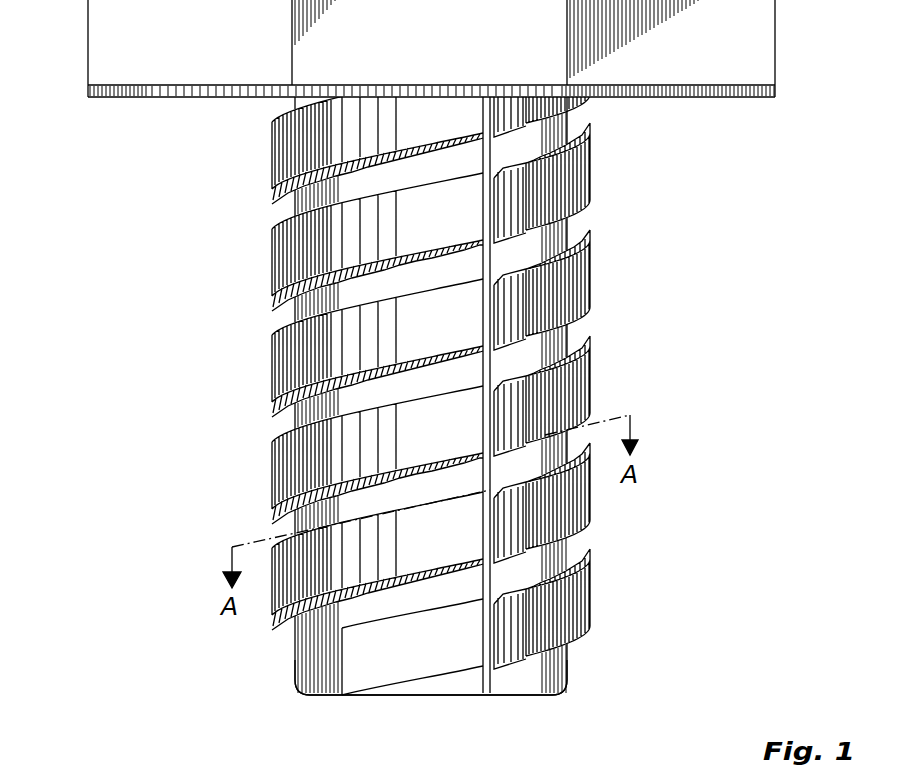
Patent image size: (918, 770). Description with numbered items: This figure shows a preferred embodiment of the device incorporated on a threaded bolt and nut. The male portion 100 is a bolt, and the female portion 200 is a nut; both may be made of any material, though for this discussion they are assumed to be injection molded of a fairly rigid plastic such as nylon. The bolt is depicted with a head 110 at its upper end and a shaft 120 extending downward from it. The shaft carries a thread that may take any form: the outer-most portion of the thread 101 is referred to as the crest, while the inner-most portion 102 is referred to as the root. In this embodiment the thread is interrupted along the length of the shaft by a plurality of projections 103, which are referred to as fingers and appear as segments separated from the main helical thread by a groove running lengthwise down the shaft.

The male portion 100 is at (150, 278).
The crest of the thread 101 is at (567, 383).
The root of the thread 102 is at (577, 538).
The projections 103 is at (517, 298).
The head 110 is at (110, 36).
The shaft 120 is at (550, 677).
The female portion 200 is at (404, 766).